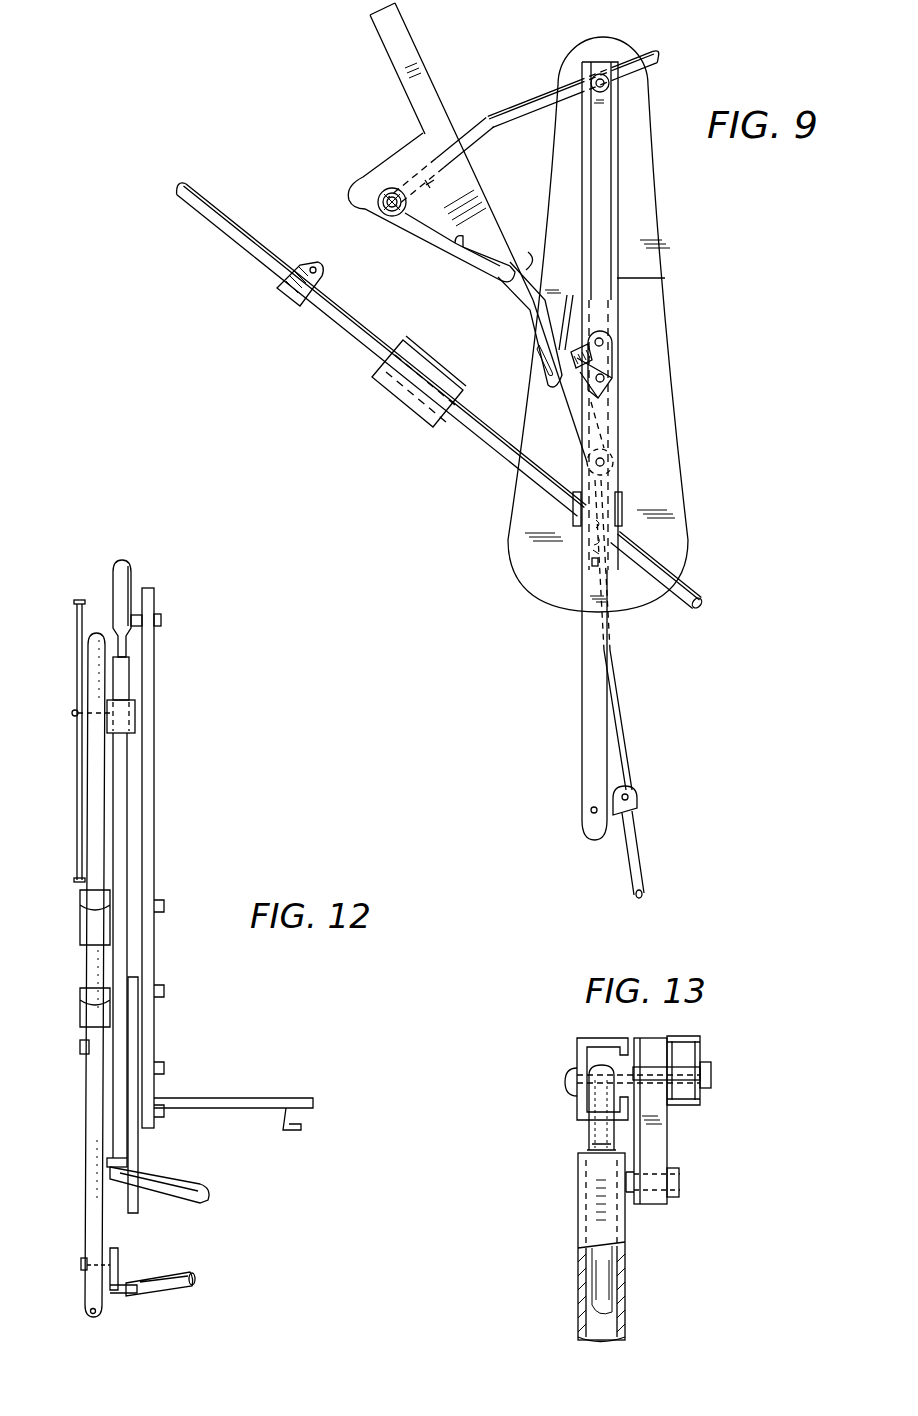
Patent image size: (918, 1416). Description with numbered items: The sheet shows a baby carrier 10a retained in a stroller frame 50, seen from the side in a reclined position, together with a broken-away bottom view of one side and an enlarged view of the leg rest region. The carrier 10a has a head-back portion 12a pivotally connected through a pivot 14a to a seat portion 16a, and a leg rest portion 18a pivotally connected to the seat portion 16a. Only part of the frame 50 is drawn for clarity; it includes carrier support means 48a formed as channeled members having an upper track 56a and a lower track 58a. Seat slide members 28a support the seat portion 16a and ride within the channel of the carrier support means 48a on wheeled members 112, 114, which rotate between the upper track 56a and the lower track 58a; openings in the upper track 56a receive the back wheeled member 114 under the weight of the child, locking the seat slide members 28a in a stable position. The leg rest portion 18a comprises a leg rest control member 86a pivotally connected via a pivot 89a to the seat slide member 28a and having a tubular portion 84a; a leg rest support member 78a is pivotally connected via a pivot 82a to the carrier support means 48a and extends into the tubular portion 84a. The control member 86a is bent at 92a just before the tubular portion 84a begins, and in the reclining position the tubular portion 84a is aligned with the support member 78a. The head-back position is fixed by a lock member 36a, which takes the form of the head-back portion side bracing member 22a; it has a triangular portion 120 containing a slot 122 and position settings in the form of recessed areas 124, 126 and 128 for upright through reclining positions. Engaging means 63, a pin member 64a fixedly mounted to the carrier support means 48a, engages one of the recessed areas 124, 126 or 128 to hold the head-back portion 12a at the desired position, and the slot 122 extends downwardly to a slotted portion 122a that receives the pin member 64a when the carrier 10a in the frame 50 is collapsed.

In FIG. 9, the carrier 10a is at (700, 436).
In FIG. 12, the carrier 10a is at (180, 640).
In FIG. 9, the head-back portion 12a is at (381, 100).
In FIG. 9, the pivot 14a is at (605, 466).
In FIG. 9, the seat portion 16a is at (628, 193).
In FIG. 12, the seat portion 16a is at (155, 798).
In FIG. 9, the leg rest portion 18a is at (651, 833).
In FIG. 12, the leg rest portion 18a is at (157, 1332).
In FIG. 13, the leg rest portion 18a is at (674, 1228).
In FIG. 9, the head-back portion side bracing member 22a is at (409, 38).
In FIG. 9, the seat slide member 28a is at (606, 600).
In FIG. 12, the seat slide member 28a is at (155, 850).
In FIG. 9, the lock member 36a is at (385, 153).
In FIG. 9, the carrier support means 48a is at (580, 184).
In FIG. 12, the carrier support means 48a is at (118, 757).
In FIG. 9, the stroller frame 50 is at (540, 100).
In FIG. 9, the upper track 56a is at (584, 280).
In FIG. 9, the lower track 58a is at (666, 278).
In FIG. 9, the engaging means 63 is at (400, 213).
In FIG. 9, the pin member 64a is at (396, 196).
In FIG. 9, the leg rest support member 78a is at (616, 691).
In FIG. 13, the leg rest support member 78a is at (591, 1128).
In FIG. 9, the pivot 82a is at (591, 563).
In FIG. 13, the pivot 82a is at (573, 1084).
In FIG. 13, the tubular portion 84a is at (579, 1296).
In FIG. 9, the leg rest control member 86a is at (641, 873).
In FIG. 12, the leg rest control member 86a is at (152, 1297).
In FIG. 13, the leg rest control member 86a is at (626, 1236).
In FIG. 9, the pivot 89a is at (590, 810).
In FIG. 12, the pivot 89a is at (121, 1256).
In FIG. 13, the pivot 89a is at (681, 1183).
In FIG. 9, the bend 92a is at (631, 780).
In FIG. 13, the bend 92a is at (590, 1146).
In FIG. 9, the wheeled member 112 is at (608, 585).
In FIG. 9, the wheeled member 114 is at (603, 338).
In FIG. 9, the triangular portion 120 is at (433, 252).
In FIG. 9, the slot 122 is at (483, 276).
In FIG. 9, the slotted portion 122a is at (548, 349).
In FIG. 9, the recessed area 124 is at (548, 340).
In FIG. 9, the recessed area 126 is at (480, 234).
In FIG. 9, the recessed area 128 is at (430, 185).